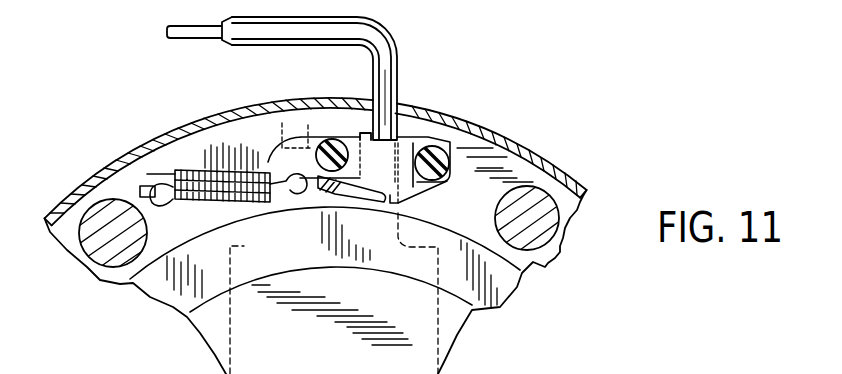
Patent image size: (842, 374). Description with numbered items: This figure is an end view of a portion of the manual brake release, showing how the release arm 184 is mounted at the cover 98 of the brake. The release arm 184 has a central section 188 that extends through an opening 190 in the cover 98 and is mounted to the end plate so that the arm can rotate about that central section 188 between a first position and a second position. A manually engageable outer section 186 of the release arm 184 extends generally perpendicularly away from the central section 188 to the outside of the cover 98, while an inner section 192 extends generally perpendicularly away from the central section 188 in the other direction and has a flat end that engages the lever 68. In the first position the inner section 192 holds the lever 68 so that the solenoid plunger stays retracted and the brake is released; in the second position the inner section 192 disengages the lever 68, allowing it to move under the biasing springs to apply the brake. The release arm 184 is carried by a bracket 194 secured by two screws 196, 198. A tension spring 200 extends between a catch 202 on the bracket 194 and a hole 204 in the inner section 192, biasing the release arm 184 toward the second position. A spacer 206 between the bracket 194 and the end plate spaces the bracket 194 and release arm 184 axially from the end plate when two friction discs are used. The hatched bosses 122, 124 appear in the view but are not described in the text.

The lever 68 is at (280, 120).
The cover 98 is at (560, 172).
The mounting boss 122 is at (546, 242).
The mounting boss 124 is at (110, 246).
The release arm 184 is at (385, 42).
The manually engageable outer section 186 is at (245, 24).
The central section 188 is at (393, 80).
The opening 190 is at (403, 110).
The inner section 192 is at (360, 205).
The bracket 194 is at (420, 143).
The screw 196 is at (447, 170).
The screw 198 is at (327, 141).
The tension spring 200 is at (213, 172).
The catch 202 is at (150, 185).
The hole 204 is at (311, 204).
The spacer 206 is at (433, 197).